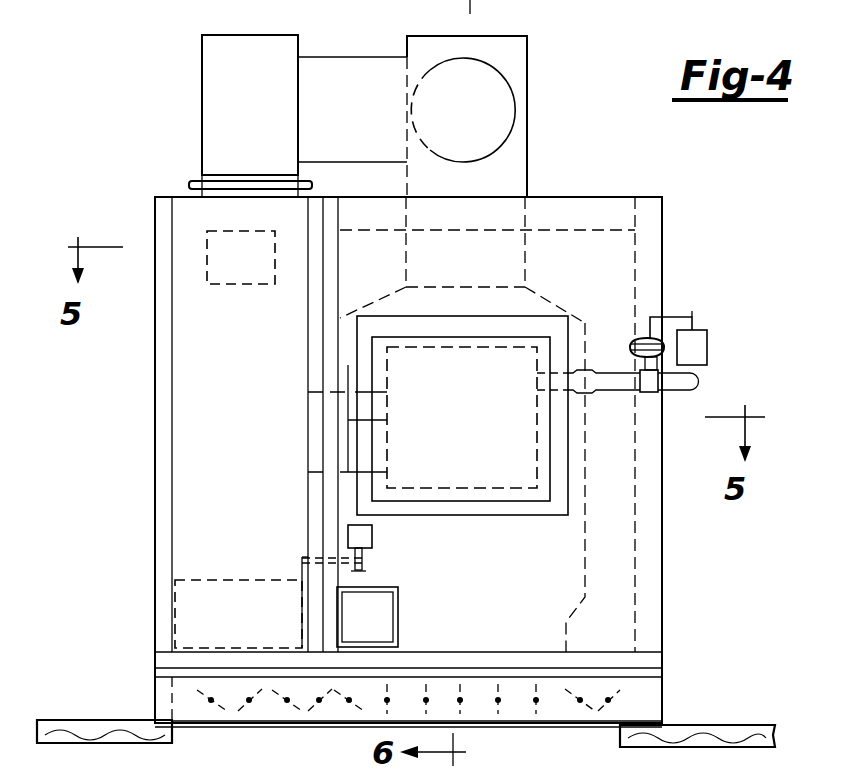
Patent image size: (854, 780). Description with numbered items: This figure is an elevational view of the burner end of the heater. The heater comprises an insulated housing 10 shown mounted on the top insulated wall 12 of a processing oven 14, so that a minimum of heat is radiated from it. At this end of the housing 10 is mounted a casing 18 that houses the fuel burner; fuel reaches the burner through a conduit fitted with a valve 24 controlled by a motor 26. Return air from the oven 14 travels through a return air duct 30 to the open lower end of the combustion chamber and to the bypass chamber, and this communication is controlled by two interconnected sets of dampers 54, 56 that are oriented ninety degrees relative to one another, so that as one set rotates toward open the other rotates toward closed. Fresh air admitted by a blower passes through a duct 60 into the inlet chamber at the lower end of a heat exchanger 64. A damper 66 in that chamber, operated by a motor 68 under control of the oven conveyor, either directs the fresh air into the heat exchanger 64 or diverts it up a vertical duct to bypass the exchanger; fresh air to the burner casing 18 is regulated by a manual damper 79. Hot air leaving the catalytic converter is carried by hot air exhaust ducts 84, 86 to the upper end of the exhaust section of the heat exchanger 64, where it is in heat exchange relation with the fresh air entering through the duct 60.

The housing 10 is at (150, 338).
The top insulated wall 12 is at (735, 723).
The processing oven 14 is at (243, 285).
The casing 18 is at (383, 450).
The valve 24 is at (638, 340).
The motor 26 is at (745, 310).
The return air duct 30 is at (597, 747).
The dampers 54 is at (462, 688).
The dampers 56 is at (318, 708).
The duct 60 is at (398, 620).
The heat exchanger 64 is at (184, 401).
The damper 66 is at (195, 590).
The motor 68 is at (372, 538).
The manual damper 79 is at (337, 437).
The hot air exhaust duct 84 is at (528, 168).
The hot air exhaust duct 86 is at (369, 23).